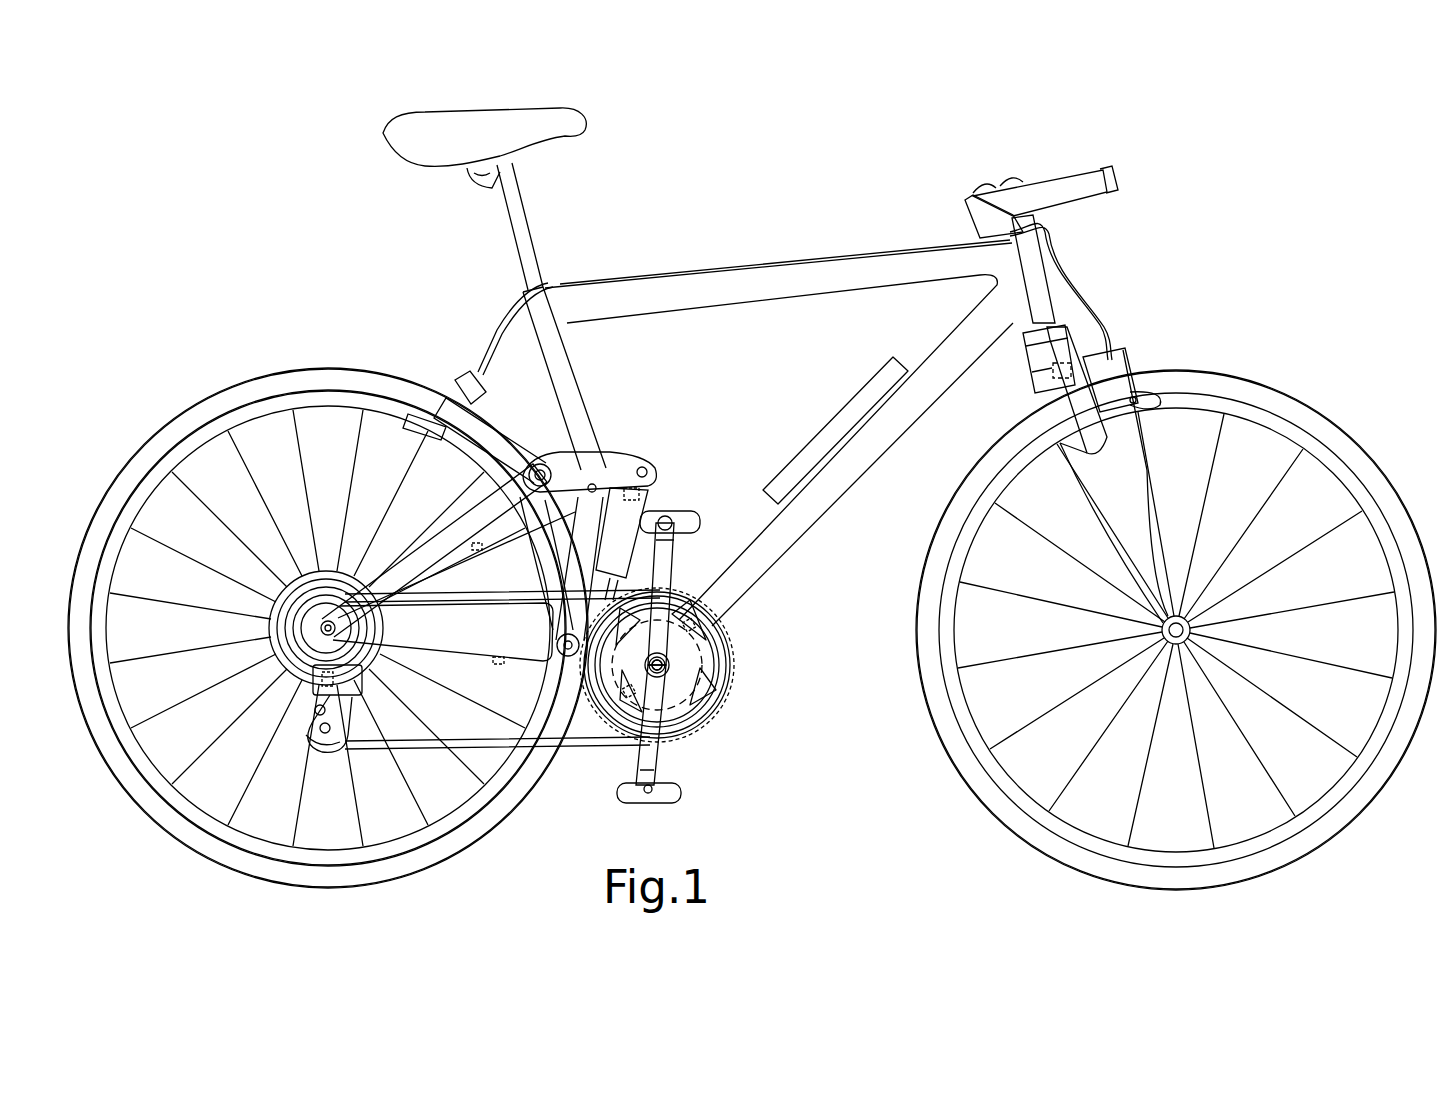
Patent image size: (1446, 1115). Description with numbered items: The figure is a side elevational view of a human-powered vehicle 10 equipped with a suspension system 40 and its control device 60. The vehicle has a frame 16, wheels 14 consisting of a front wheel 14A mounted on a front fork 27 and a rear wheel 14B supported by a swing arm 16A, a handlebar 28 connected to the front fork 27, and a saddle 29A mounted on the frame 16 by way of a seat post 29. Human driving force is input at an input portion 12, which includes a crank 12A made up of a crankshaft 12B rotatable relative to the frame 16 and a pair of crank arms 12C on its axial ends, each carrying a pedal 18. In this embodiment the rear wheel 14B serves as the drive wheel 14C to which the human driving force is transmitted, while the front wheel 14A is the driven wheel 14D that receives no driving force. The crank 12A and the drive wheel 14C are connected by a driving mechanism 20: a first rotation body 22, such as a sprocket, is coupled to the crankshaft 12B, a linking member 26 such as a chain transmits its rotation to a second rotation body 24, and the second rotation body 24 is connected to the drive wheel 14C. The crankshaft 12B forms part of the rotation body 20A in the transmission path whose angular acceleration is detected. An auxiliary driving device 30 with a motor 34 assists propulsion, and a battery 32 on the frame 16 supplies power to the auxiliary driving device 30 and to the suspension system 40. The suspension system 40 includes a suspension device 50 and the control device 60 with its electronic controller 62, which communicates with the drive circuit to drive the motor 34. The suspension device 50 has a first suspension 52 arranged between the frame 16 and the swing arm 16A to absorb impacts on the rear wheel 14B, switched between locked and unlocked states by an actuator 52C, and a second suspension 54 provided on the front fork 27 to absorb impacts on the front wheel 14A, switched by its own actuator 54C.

The human-powered vehicle 10 is at (1220, 80).
The input portion 12 is at (797, 848).
The crank 12A is at (762, 772).
The crankshaft 12B is at (706, 724).
The crank arms 12C is at (668, 556).
The wheels 14 is at (328, 595).
The front wheel 14A is at (1290, 403).
The rear wheel 14B is at (268, 380).
The drive wheel 14C is at (328, 605).
The driven wheel 14D is at (1177, 618).
The frame 16 is at (773, 288).
The swing arm 16A is at (410, 550).
The pedal 18 is at (688, 516).
The driving mechanism 20 is at (578, 794).
The rotation body 20A is at (727, 682).
The first rotation body 22 is at (728, 690).
The second rotation body 24 is at (328, 560).
The linking member 26 is at (472, 755).
The front fork 27 is at (1100, 473).
The handlebar 28 is at (1055, 183).
The seat post 29 is at (517, 215).
The saddle 29A is at (548, 128).
The auxiliary driving device 30 is at (740, 667).
The battery 32 is at (840, 415).
The motor 34 is at (728, 640).
The suspension system 40 is at (1188, 300).
The suspension device 50 is at (1213, 328).
The first suspension 52 is at (640, 490).
The actuator 52C is at (625, 462).
The second suspension 54 is at (1120, 400).
The actuator 54C is at (1042, 383).
The control device 60 is at (814, 590).
The electronic controller 62 is at (700, 605).